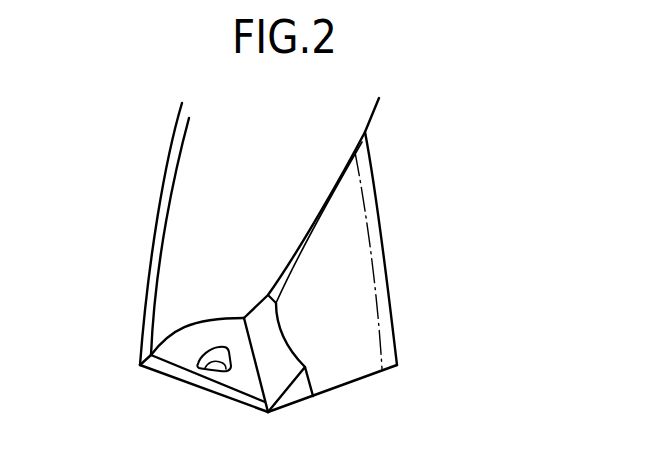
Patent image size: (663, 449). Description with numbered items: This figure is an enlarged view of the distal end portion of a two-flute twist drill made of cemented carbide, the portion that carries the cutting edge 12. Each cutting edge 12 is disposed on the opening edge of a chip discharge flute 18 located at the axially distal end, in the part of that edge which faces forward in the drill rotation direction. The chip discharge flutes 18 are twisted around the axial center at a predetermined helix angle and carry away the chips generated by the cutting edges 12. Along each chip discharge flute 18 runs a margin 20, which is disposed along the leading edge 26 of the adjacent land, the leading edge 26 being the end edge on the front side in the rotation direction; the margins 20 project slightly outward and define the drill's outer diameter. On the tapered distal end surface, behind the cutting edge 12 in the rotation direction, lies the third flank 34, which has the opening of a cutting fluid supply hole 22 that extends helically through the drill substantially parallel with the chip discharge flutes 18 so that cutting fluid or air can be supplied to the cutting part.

The cutting edge 12 is at (360, 380).
The chip discharge flute 18 is at (353, 262).
The margin 20 is at (153, 237).
The cutting fluid supply hole 22 is at (209, 372).
The leading edge 26 is at (377, 170).
The third flank 34 is at (188, 337).